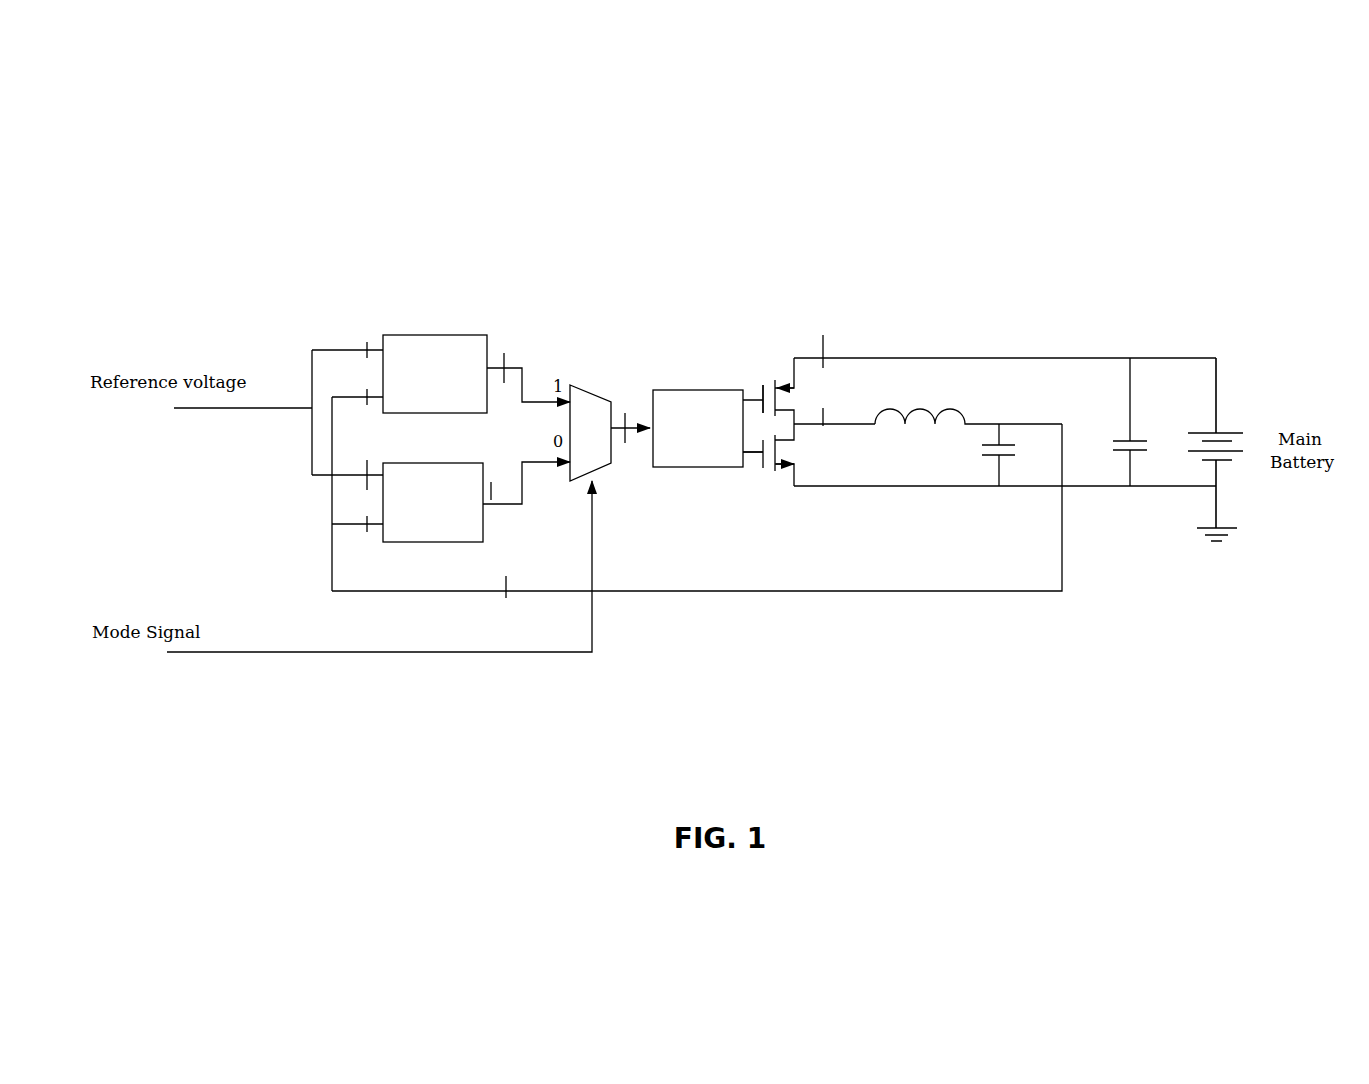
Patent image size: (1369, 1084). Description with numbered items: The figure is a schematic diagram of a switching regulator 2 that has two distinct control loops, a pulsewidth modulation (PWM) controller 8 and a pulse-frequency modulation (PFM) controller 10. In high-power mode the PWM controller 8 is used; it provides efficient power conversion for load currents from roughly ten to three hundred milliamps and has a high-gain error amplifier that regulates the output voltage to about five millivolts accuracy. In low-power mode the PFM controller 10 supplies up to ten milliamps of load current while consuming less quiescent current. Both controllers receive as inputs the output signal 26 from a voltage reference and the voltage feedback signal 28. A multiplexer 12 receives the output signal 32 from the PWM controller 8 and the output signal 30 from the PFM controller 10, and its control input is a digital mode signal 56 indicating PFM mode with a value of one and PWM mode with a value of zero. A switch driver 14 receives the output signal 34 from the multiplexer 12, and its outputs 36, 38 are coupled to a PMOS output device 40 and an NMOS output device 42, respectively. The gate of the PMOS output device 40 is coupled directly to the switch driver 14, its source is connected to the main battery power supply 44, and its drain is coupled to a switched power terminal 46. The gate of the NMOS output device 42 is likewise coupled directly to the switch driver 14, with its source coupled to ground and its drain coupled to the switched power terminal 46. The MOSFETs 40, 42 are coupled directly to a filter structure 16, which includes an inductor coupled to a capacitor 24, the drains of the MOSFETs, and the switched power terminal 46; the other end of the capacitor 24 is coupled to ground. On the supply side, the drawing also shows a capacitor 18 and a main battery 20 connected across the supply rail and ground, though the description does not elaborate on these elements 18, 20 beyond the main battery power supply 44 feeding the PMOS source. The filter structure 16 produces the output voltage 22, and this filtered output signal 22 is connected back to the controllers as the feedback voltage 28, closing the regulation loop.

The switching regulator 2 is at (238, 257).
The pulsewidth modulation (PWM) controller 8 is at (395, 538).
The pulse-frequency modulation (PFM) controller 10 is at (444, 335).
The multiplexer 12 is at (581, 392).
The switch driver 14 is at (669, 391).
The filter structure 16 is at (990, 378).
The input capacitor 18 is at (1143, 422).
The main battery 20 is at (1250, 422).
The output voltage 22 is at (995, 597).
The capacitor 24 is at (1020, 455).
The output signal from a voltage reference 26 is at (365, 404).
The voltage feedback signal 28 is at (428, 467).
The output signal from the PFM controller 30 is at (528, 360).
The output signal from the PWM controller 32 is at (524, 479).
The output signal from the multiplexer 34 is at (629, 443).
The switch driver output 36 is at (745, 380).
The switch driver output 38 is at (740, 462).
The PMOS output device 40 is at (763, 380).
The NMOS output device 42 is at (758, 488).
The main battery power supply 44 is at (818, 336).
The switched power terminal 46 is at (834, 403).
The digital mode signal 56 is at (460, 636).